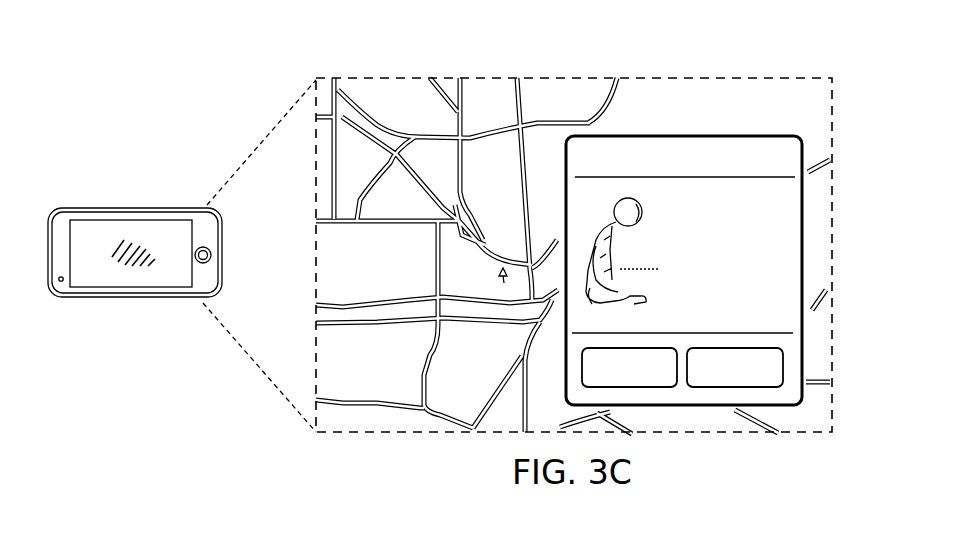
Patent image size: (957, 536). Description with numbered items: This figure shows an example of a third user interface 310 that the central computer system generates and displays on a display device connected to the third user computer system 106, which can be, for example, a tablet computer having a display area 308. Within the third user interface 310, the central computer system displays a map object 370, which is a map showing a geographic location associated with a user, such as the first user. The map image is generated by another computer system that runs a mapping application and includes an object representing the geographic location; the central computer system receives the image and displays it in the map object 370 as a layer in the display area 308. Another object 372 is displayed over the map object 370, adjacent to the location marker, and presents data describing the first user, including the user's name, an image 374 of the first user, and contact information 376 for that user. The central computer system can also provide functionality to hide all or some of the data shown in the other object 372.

The third user computer system 106 is at (137, 207).
The display area 308 is at (138, 302).
The third user interface 310 is at (715, 80).
The map object 370 is at (667, 415).
The other object 372 is at (773, 163).
The image of the first user 374 is at (598, 253).
The contact information 376 is at (728, 252).